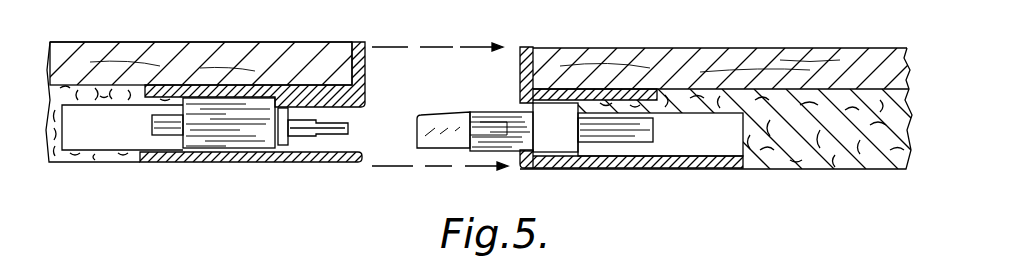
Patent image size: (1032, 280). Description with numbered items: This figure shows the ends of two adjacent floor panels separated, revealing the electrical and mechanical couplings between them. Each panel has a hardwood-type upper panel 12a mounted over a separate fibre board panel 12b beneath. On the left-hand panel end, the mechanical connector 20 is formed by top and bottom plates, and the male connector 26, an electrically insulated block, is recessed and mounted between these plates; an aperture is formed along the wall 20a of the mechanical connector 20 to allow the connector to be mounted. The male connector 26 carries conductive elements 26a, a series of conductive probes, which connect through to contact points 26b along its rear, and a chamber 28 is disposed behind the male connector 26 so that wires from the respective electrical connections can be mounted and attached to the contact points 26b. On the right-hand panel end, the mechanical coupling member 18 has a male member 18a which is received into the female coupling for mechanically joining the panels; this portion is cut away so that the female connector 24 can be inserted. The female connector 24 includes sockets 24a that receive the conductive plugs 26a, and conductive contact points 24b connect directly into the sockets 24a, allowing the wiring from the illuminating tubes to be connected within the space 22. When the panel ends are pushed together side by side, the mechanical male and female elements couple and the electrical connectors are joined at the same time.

The upper panel 12a is at (252, 29).
The fibre board panel 12b is at (893, 162).
The male floor panel coupling 18 is at (523, 47).
The male member 18a is at (422, 125).
The mechanical connector 20 is at (356, 47).
The wall 20a is at (288, 162).
The space 22 is at (716, 145).
The female connector 24 is at (561, 142).
The sockets 24a is at (470, 140).
The conductive contact points 24b is at (626, 130).
The male connector 26 is at (242, 133).
The conductive elements 26a is at (340, 136).
The contact points 26b is at (168, 127).
The chamber 28 is at (100, 140).